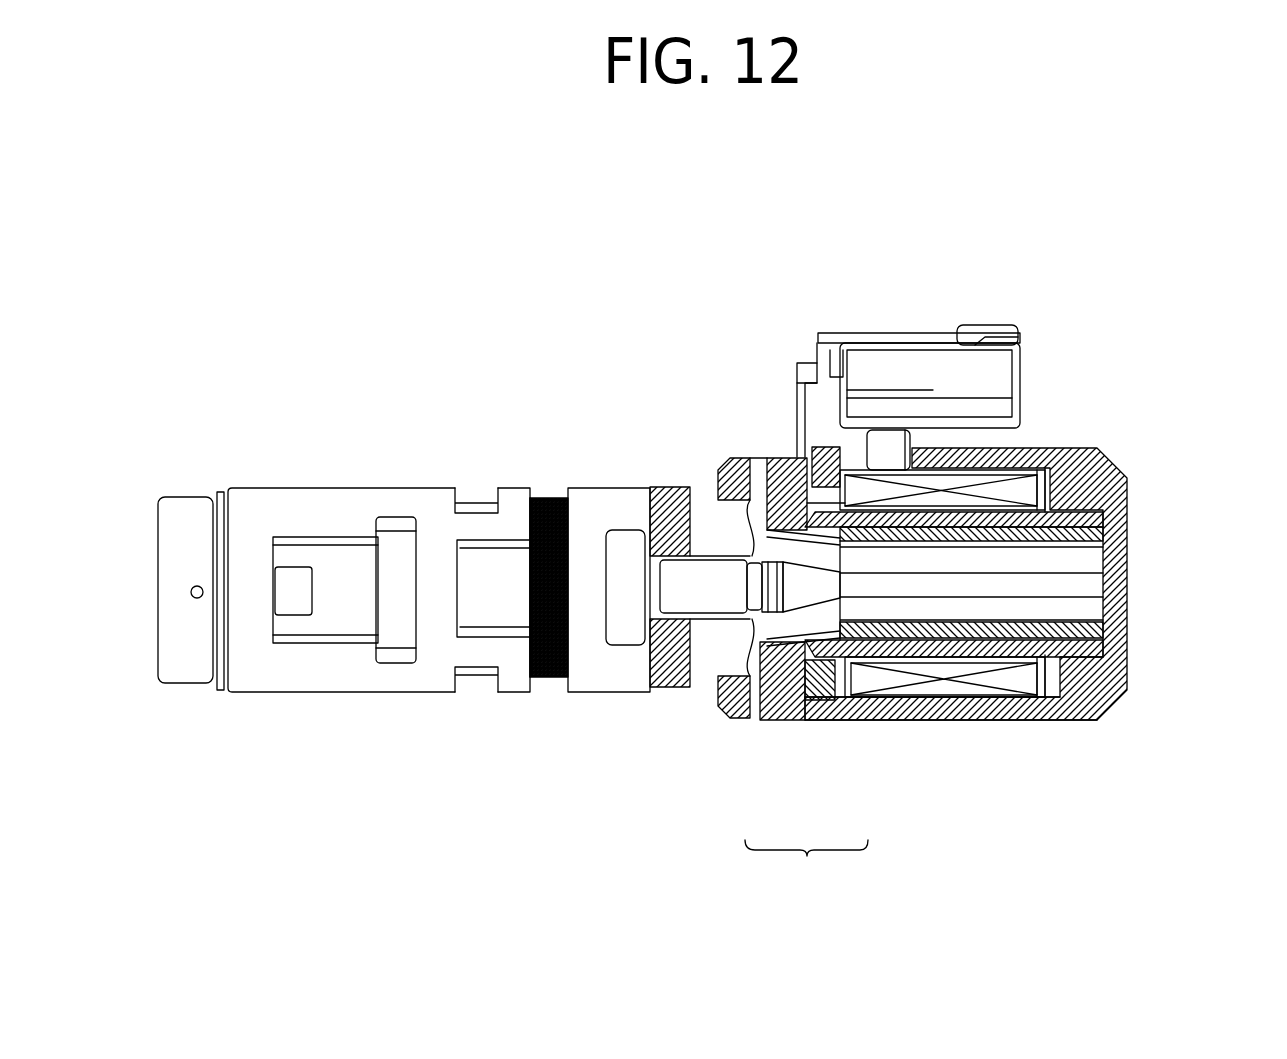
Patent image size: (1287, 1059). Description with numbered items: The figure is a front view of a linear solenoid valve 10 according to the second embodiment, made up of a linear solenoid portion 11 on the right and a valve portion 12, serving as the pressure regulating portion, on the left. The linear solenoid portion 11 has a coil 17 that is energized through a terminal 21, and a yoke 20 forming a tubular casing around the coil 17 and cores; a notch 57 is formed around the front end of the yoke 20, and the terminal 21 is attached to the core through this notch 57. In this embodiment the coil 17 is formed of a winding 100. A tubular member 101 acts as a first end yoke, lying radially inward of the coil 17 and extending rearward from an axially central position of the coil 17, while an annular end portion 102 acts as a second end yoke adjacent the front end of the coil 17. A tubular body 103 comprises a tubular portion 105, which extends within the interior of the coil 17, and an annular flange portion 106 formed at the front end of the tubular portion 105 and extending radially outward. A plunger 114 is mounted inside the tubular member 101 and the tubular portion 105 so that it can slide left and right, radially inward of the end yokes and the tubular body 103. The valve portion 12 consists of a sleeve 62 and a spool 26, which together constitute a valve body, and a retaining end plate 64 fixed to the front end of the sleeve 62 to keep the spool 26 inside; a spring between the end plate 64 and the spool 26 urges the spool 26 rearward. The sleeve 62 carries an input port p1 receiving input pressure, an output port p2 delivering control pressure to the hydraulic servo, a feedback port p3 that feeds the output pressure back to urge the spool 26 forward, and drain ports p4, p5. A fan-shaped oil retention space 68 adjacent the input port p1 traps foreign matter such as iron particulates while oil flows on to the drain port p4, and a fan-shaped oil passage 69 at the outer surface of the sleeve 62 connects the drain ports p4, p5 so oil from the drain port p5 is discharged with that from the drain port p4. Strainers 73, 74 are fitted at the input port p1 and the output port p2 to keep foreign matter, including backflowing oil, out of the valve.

The linear solenoid valve 10 is at (806, 312).
The linear solenoid portion 11 is at (1044, 340).
The valve portion 12 is at (374, 450).
The coil 17 is at (957, 722).
The yoke 20 is at (1130, 488).
The terminal 21 is at (857, 343).
The spool 26 is at (690, 578).
The notch 57 is at (908, 466).
The sleeve 62 is at (613, 476).
The retaining end plate 64 is at (195, 682).
The oil retention space 68 is at (479, 598).
The oil passage 69 is at (323, 555).
The strainer 73 is at (548, 492).
The strainer 74 is at (478, 490).
The winding 100 is at (916, 700).
The tubular member 101 is at (1058, 690).
The annular end portion 102 is at (752, 710).
The tubular body 103 is at (786, 889).
The tubular portion 105 is at (840, 702).
The annular flange portion 106 is at (786, 722).
The plunger 114 is at (1110, 621).
The input port p1 is at (556, 680).
The output port p2 is at (473, 682).
The feedback port p3 is at (625, 647).
The drain port p4 is at (394, 652).
The drain port p5 is at (290, 614).